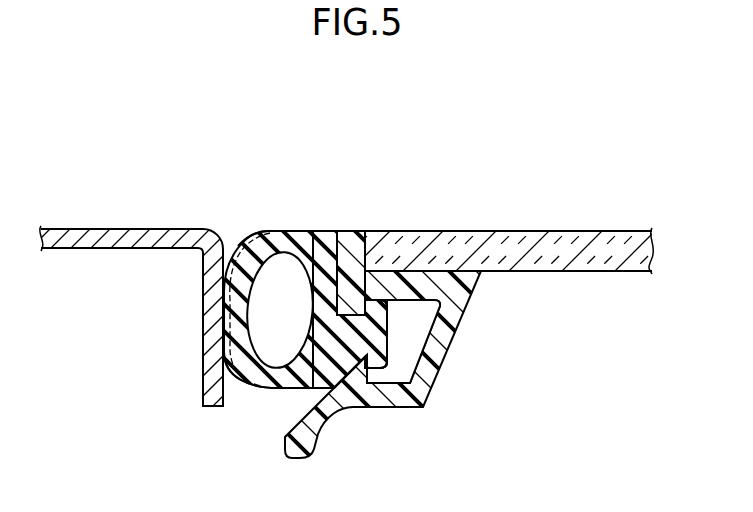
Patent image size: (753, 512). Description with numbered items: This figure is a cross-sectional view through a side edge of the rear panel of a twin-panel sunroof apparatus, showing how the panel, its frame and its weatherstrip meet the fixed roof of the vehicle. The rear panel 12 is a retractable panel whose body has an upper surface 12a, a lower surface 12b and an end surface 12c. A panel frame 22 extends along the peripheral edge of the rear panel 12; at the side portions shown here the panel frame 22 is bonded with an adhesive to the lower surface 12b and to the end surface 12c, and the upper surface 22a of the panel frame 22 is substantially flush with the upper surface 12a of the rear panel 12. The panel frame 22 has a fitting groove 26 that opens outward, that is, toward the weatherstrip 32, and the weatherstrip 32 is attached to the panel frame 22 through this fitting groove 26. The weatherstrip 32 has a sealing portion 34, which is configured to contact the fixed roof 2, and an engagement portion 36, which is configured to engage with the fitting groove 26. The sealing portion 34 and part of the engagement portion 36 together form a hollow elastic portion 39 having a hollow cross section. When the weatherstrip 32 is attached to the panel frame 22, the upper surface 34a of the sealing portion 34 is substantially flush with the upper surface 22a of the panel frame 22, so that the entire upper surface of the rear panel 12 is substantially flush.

The fixed roof 2 is at (113, 228).
The rear panel 12 is at (488, 229).
The upper surface of the rear panel 12a is at (551, 226).
The lower surface of the rear panel 12b is at (418, 270).
The end surface of the rear panel 12c is at (362, 230).
The panel frame 22 is at (432, 398).
The upper surface of the panel frame 22a is at (348, 226).
The fitting groove 26 is at (413, 345).
The weatherstrip 32 is at (265, 230).
The sealing portion 34 is at (243, 378).
The upper surface of the sealing portion 34a is at (290, 228).
The engagement portion 36 is at (318, 378).
The hollow elastic portion 39 is at (262, 310).